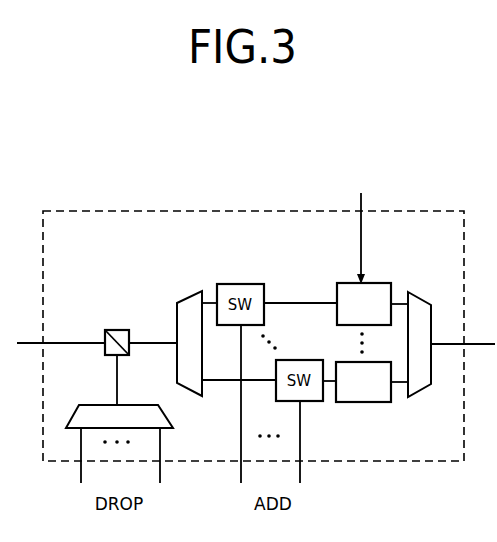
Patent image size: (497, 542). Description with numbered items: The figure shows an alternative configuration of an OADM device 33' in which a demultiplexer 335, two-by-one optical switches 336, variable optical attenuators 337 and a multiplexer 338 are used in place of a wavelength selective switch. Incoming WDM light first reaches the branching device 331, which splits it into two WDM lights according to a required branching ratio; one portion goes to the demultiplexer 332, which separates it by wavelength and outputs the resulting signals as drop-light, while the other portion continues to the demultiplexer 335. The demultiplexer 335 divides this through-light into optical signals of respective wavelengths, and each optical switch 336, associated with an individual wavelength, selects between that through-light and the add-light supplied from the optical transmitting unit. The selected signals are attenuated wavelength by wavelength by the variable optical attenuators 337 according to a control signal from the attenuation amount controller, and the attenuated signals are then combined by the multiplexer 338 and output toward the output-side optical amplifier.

The OADM device 33' is at (251, 313).
The branching device 331 is at (109, 329).
The demultiplexer 332 is at (96, 404).
The demultiplexer 335 is at (178, 301).
The 2×1 optical switch 336 is at (289, 291).
The variable optical attenuator 337 is at (382, 269).
The multiplexer 338 is at (423, 292).